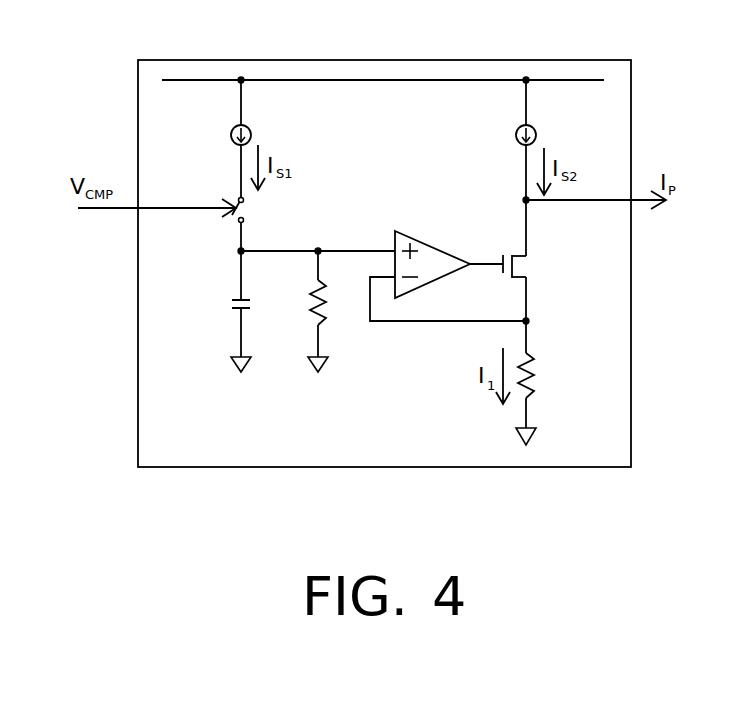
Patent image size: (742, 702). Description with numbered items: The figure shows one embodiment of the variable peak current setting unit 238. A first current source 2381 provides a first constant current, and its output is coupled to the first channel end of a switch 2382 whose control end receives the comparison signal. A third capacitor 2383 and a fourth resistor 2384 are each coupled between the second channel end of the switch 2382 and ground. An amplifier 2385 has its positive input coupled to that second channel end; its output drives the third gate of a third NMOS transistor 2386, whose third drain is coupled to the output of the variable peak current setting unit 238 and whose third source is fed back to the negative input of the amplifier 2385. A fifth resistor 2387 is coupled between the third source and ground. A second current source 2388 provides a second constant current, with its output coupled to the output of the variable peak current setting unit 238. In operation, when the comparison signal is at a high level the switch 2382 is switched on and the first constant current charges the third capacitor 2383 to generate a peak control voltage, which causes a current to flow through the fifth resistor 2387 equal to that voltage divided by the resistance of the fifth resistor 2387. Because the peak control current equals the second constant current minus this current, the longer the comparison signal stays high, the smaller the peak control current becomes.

The variable peak current setting unit 238 is at (403, 60).
The first current source 2381 is at (253, 132).
The switch 2382 is at (245, 209).
The third capacitor 2383 is at (229, 304).
The fourth resistor 2384 is at (330, 310).
The amplifier 2385 is at (437, 244).
The third NMOS transistor 2386 is at (530, 262).
The fifth resistor 2387 is at (516, 400).
The second current source 2388 is at (582, 122).